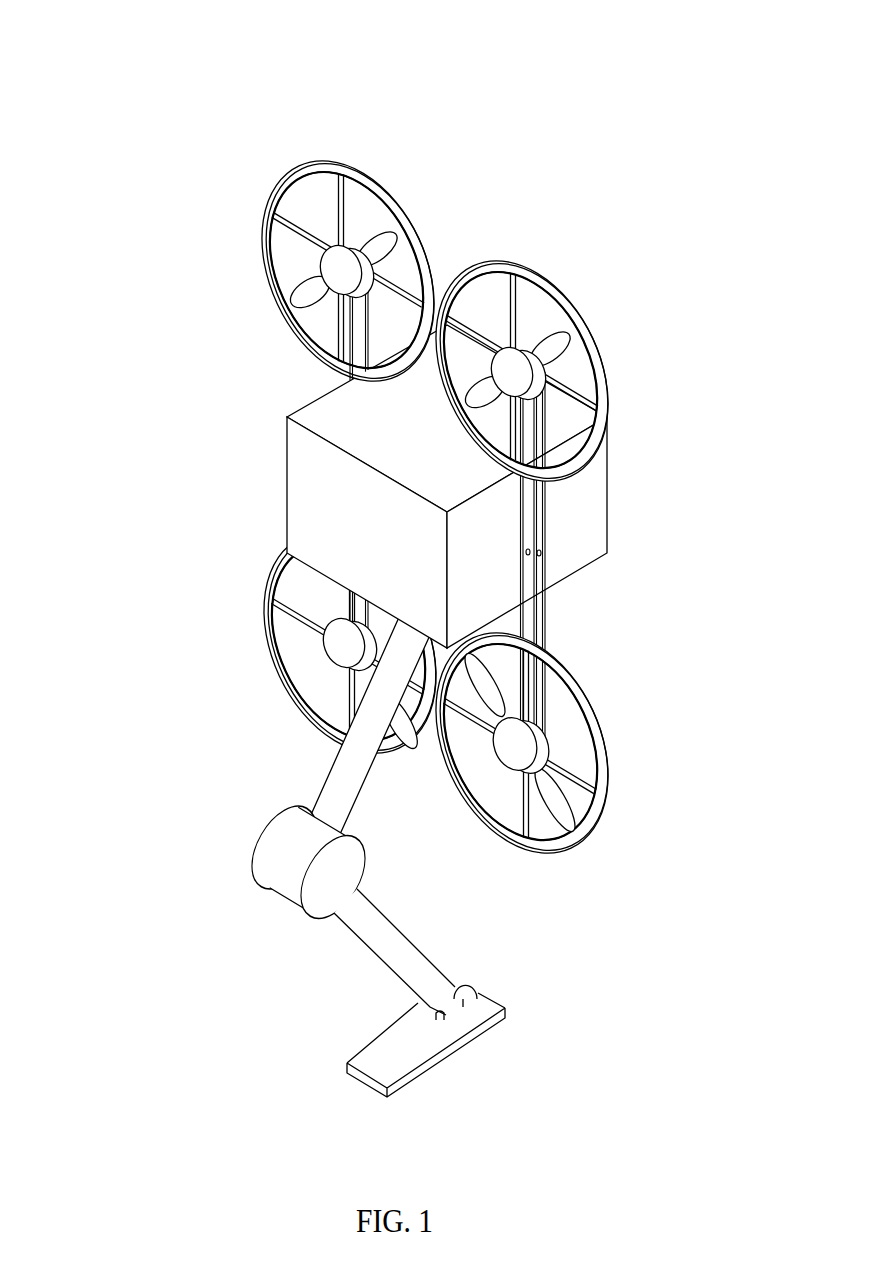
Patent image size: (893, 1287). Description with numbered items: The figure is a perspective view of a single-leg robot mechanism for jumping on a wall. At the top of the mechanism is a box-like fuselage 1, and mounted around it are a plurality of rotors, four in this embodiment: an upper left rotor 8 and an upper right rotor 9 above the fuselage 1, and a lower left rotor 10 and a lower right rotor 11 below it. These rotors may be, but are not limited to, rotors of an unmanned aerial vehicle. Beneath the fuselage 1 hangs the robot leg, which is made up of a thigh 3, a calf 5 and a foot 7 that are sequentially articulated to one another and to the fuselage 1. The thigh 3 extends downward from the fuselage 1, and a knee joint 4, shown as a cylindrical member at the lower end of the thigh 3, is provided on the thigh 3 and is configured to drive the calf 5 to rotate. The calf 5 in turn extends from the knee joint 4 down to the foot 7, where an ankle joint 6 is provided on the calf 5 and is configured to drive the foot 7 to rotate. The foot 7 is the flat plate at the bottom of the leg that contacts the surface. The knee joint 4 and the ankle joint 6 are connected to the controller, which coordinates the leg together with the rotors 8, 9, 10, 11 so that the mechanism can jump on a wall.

The fuselage 1 is at (112, 426).
The thigh 3 is at (87, 694).
The knee joint 4 is at (102, 815).
The calf 5 is at (418, 968).
The ankle joint 6 is at (460, 1002).
The foot 7 is at (195, 1085).
The upper left rotor 8 is at (243, 25).
The upper right rotor 9 is at (592, 382).
The lower left rotor 10 is at (93, 525).
The lower right rotor 11 is at (595, 795).